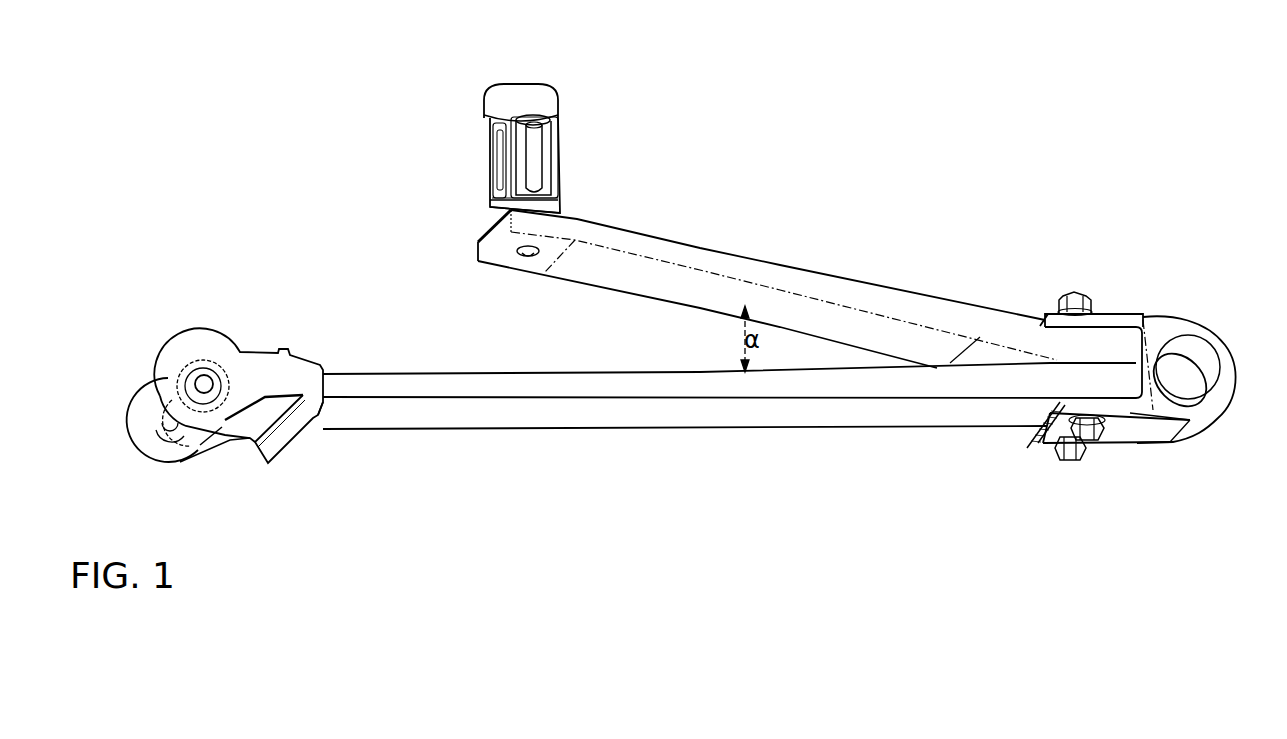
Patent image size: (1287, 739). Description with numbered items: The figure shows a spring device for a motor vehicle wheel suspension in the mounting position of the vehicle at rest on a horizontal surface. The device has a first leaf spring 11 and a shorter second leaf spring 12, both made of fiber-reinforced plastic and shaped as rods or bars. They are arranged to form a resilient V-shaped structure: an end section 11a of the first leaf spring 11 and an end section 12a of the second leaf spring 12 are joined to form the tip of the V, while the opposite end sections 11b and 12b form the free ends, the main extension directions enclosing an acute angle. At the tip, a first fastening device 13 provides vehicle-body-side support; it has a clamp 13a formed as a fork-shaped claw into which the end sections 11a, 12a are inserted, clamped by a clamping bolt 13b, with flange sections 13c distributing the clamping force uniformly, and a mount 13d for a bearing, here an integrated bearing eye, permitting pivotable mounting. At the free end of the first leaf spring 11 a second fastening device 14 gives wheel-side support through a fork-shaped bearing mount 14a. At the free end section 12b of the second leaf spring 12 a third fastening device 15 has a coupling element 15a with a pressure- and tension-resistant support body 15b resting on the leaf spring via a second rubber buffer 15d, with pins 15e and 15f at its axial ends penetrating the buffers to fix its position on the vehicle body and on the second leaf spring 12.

The first leaf spring 11 is at (537, 416).
The end section of first leaf spring 11a is at (1080, 386).
The end section of first leaf spring 11b is at (326, 421).
The second leaf spring 12 is at (810, 303).
The end section of second leaf spring 12a is at (1129, 338).
The free end section of second leaf spring 12b is at (496, 260).
The first fastening device 13 is at (1135, 383).
The clamp 13a is at (1066, 318).
The clamping bolt 13b is at (1068, 461).
The flange sections 13c is at (1111, 317).
The mount for a bearing 13d is at (1192, 350).
The second fastening device 14 is at (225, 381).
The bearing mount 14a is at (201, 378).
The third fastening device 15 is at (531, 135).
The coupling element 15a is at (549, 141).
The support body 15b is at (556, 163).
The second rubber buffer 15d is at (551, 204).
The pin 15e is at (530, 77).
The pin 15f is at (527, 260).